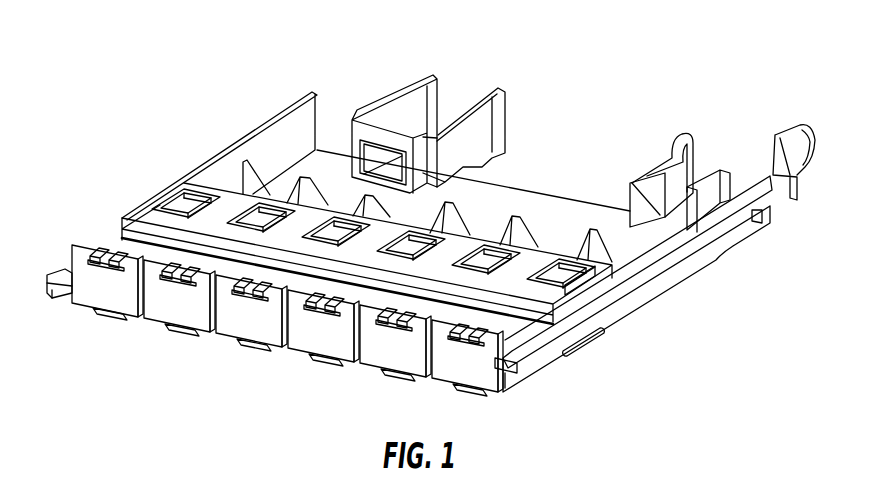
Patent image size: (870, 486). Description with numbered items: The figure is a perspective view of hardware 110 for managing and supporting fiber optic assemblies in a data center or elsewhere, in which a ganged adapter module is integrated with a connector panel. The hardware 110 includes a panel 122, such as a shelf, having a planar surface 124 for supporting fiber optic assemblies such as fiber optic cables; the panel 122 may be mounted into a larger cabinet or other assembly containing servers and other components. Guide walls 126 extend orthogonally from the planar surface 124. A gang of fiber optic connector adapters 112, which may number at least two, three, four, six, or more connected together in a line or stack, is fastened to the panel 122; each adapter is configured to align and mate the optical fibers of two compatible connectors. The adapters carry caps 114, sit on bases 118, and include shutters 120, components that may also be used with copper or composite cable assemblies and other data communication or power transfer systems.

The hardware 110 is at (157, 150).
The fiber optic connector adapters 112 is at (182, 307).
The caps 114 is at (185, 333).
The bases 118 is at (120, 237).
The shutters 120 is at (253, 320).
The panel 122 is at (657, 280).
The planar surface 124 is at (562, 213).
The guide walls 126 is at (385, 120).